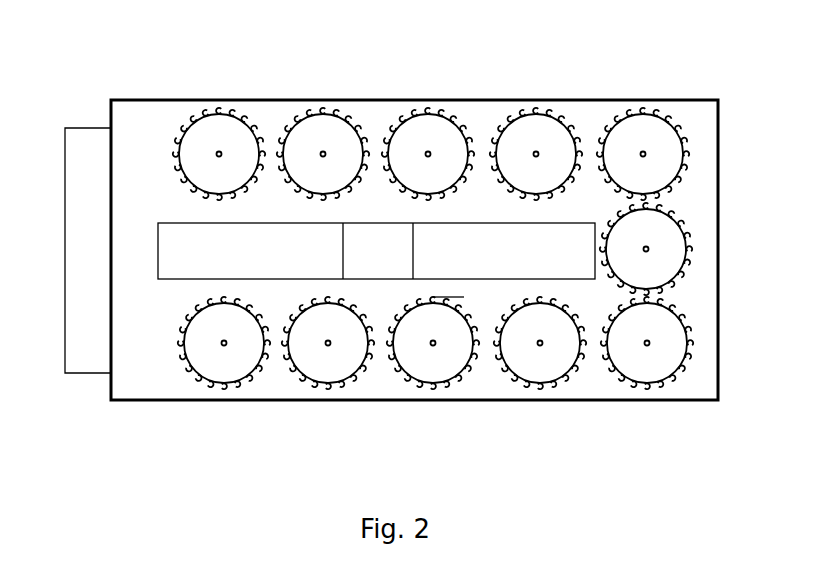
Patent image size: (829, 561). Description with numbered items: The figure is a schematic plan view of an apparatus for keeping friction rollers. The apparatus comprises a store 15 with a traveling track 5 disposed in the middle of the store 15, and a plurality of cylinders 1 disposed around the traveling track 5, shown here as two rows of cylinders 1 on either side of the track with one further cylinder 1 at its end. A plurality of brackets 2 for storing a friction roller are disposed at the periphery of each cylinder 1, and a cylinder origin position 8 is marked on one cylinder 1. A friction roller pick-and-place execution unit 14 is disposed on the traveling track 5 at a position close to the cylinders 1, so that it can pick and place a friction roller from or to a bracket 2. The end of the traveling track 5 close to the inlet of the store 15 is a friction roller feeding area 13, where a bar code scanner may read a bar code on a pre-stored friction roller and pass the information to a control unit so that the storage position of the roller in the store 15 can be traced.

The cylinder 1 is at (204, 140).
The bracket 2 is at (206, 378).
The traveling track 5 is at (175, 223).
The cylinder origin position 8 is at (428, 205).
The friction roller feeding area 13 is at (82, 355).
The friction roller pick-and-place execution unit 14 is at (370, 250).
The store 15 is at (477, 120).